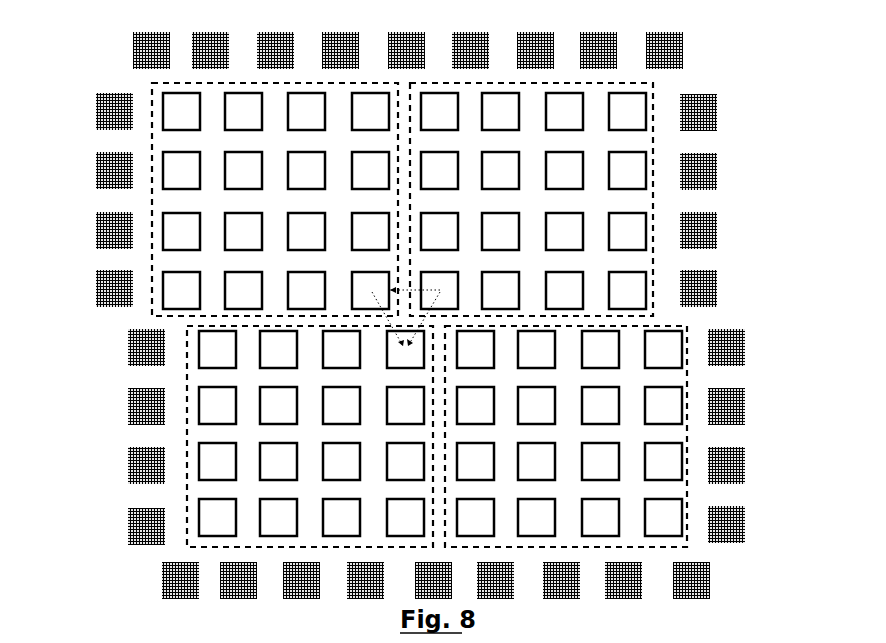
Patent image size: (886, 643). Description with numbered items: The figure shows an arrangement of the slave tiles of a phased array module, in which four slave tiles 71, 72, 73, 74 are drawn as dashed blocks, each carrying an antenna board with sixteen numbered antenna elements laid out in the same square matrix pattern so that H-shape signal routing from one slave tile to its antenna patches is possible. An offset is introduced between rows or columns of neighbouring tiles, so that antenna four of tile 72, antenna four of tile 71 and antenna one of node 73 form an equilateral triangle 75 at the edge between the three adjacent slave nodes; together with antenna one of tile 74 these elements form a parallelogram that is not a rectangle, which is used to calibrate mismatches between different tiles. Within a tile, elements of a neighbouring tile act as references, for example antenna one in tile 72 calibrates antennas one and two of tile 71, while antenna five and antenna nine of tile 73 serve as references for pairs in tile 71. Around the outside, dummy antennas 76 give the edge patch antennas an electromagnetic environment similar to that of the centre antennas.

The slave tile 71 is at (150, 183).
The slave tile 72 is at (187, 363).
The slave tile 73 is at (653, 150).
The slave tile 74 is at (690, 383).
The equilateral triangle 75 is at (427, 322).
The dummy antenna 76 is at (663, 43).